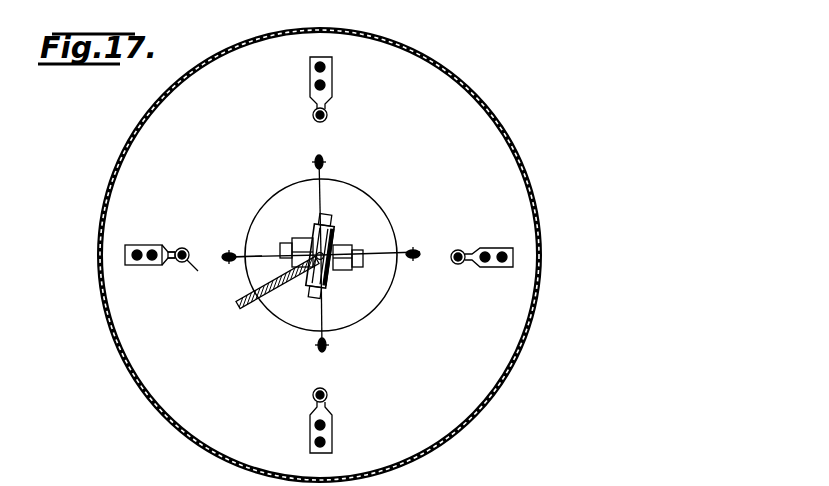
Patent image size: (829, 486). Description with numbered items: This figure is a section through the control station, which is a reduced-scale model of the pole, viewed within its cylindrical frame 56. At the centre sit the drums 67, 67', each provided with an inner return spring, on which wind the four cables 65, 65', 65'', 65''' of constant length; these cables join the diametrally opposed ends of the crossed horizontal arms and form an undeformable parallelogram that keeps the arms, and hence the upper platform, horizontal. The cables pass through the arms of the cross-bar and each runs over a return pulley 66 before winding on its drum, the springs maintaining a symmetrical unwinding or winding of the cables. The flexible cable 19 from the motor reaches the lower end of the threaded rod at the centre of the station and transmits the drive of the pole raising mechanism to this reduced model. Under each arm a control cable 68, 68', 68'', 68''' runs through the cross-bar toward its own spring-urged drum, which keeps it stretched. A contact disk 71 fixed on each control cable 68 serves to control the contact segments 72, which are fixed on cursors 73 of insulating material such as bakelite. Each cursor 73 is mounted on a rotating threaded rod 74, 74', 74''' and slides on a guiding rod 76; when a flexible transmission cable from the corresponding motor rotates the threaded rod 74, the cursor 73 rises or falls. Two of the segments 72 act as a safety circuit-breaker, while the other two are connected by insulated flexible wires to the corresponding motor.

The cylindrical frame 56 is at (493, 99).
The flexible cable 19 is at (243, 310).
The cable 65 is at (271, 254).
The cable 65' is at (370, 244).
The cable 65'' is at (340, 303).
The cable 65''' is at (305, 205).
The return pulley 66 is at (236, 262).
The drum 67 is at (311, 268).
The drum 67' is at (332, 265).
The control cable 68 is at (182, 239).
The control cable 68' is at (461, 275).
The control cable 68'' is at (303, 397).
The control cable 68''' is at (305, 121).
The contact disk 71 is at (201, 272).
The contact segment 72 is at (168, 252).
The cursor 73 is at (129, 266).
The threaded rod 74 is at (161, 275).
The threaded rod 74' is at (411, 350).
The threaded rod 74''' is at (345, 83).
The guiding rod 76 is at (136, 250).